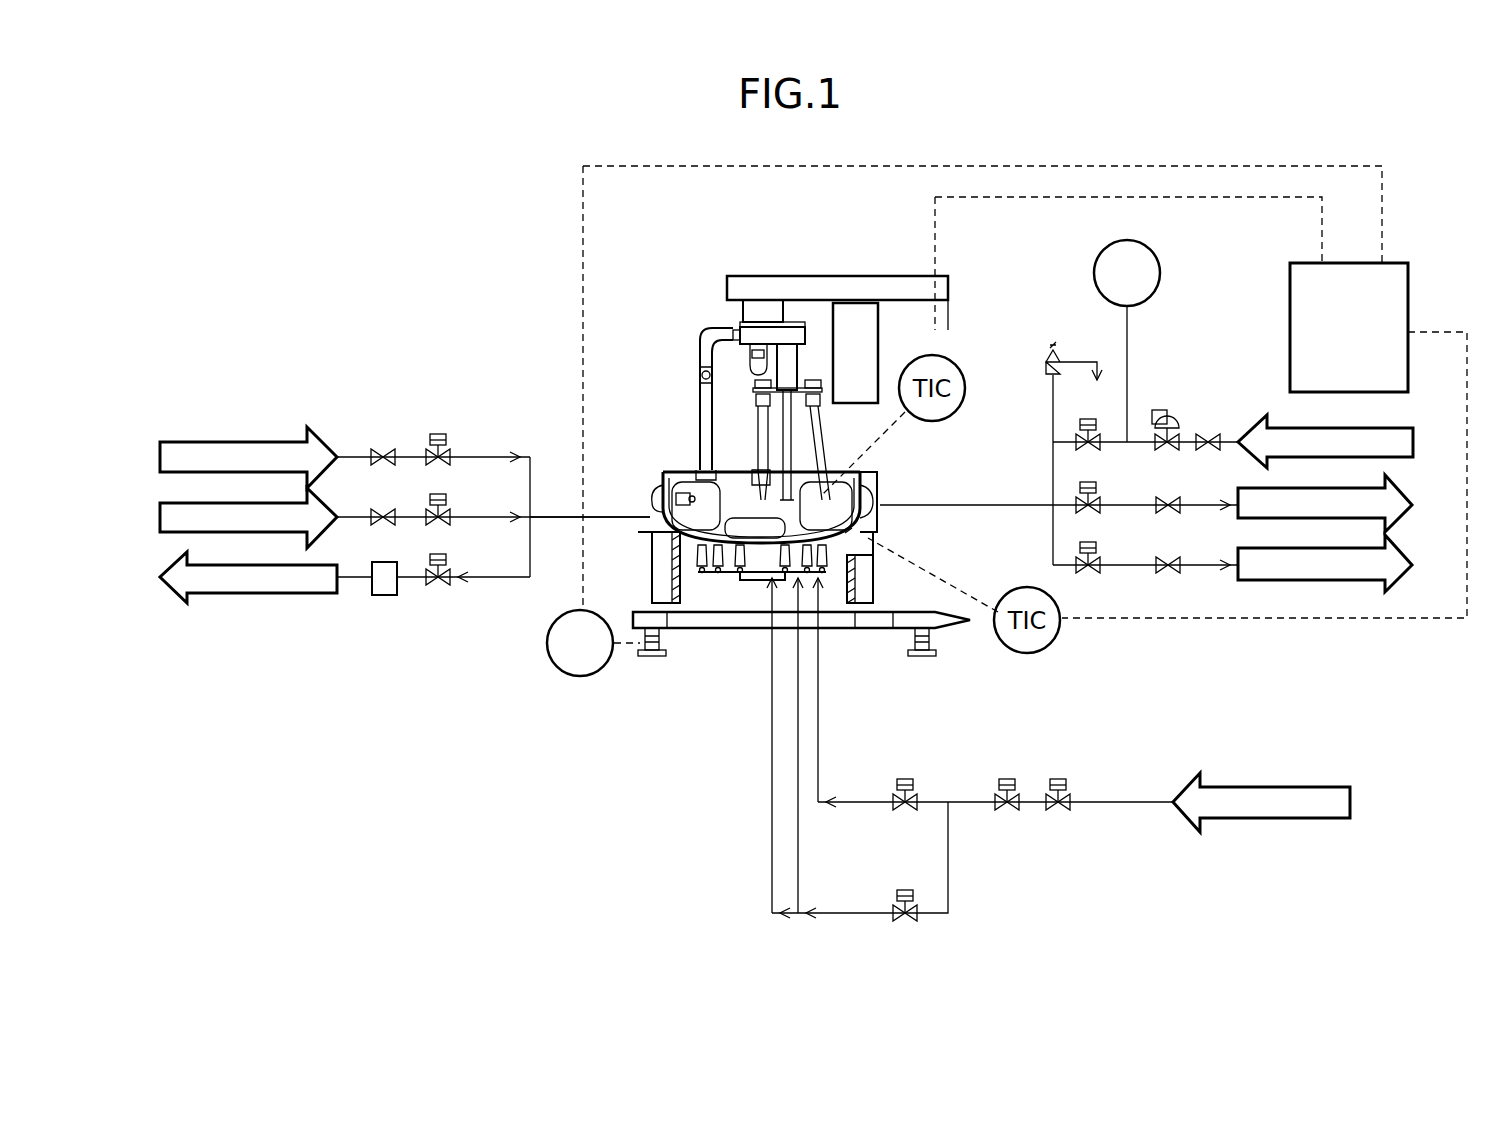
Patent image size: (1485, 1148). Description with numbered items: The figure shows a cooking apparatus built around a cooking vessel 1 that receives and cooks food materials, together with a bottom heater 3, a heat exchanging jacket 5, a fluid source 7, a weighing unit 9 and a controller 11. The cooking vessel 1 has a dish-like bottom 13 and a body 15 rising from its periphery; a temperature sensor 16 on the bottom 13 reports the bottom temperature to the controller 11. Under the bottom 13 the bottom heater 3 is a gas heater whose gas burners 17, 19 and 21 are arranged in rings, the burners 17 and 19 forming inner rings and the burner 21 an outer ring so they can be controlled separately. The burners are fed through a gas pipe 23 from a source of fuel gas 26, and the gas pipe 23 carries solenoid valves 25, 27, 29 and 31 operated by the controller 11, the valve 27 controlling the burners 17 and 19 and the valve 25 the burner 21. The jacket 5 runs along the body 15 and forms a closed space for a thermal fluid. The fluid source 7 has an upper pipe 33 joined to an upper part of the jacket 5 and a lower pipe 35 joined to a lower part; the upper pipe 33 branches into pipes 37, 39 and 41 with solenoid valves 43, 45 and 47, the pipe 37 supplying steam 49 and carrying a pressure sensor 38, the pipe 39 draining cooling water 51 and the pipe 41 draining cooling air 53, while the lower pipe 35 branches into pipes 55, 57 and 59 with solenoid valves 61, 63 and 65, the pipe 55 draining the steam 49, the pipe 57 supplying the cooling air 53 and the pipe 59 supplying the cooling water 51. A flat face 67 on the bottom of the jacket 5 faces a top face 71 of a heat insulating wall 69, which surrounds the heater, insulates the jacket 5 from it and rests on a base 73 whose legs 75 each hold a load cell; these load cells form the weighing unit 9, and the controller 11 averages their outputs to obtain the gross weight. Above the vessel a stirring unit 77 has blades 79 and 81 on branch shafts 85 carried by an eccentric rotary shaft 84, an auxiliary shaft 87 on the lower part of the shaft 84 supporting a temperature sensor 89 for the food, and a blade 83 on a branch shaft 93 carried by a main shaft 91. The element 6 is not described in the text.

The cooking vessel 1 is at (726, 461).
The bottom heater 3 is at (734, 637).
The heat exchanging jacket 5 is at (655, 495).
The support arm 6 is at (645, 533).
The fluid source 7 is at (1210, 388).
The weighing unit 9 is at (605, 695).
The controller 11 is at (1410, 266).
The bottom 13 is at (700, 450).
The body 15 is at (652, 485).
The temperature sensor 16 is at (880, 535).
The gas burner 17 is at (757, 575).
The gas burner 19 is at (727, 585).
The gas burner 21 is at (703, 578).
The gas pipe 23 is at (1123, 797).
The solenoid valve 25 is at (918, 798).
The fuel gas 26 is at (1333, 790).
The solenoid valve 27 is at (908, 922).
The solenoid valve 29 is at (1020, 797).
The solenoid valve 31 is at (1072, 797).
The upper pipe 33 is at (1003, 503).
The lower pipe 35 is at (548, 516).
The pipe 37 is at (1140, 432).
The pressure sensor 38 is at (1163, 275).
The pipe 39 is at (1150, 500).
The pipe 41 is at (1150, 562).
The solenoid valve 43 is at (1095, 412).
The solenoid valve 45 is at (1100, 500).
The solenoid valve 47 is at (1100, 560).
The steam 49 is at (300, 598).
The cooling water 51 is at (240, 440).
The cooling air 53 is at (328, 497).
The pipe 55 is at (495, 583).
The pipe 57 is at (497, 515).
The pipe 59 is at (483, 452).
The solenoid valve 61 is at (437, 592).
The solenoid valve 63 is at (435, 493).
The solenoid valve 65 is at (437, 433).
The flat face 67 is at (655, 548).
The heat insulating wall 69 is at (880, 580).
The top face 71 is at (878, 512).
The base 73 is at (845, 630).
The legs 75 is at (650, 658).
The stirring unit 77 is at (772, 276).
The blade 79 is at (858, 492).
The blade 81 is at (750, 480).
The blade 83 is at (676, 492).
The eccentric rotary shaft 84 is at (822, 385).
The branch shafts 85 is at (818, 432).
The auxiliary shaft 87 is at (797, 357).
The temperature sensor 89 is at (878, 398).
The main shaft 91 is at (742, 312).
The branch shaft 93 is at (695, 367).